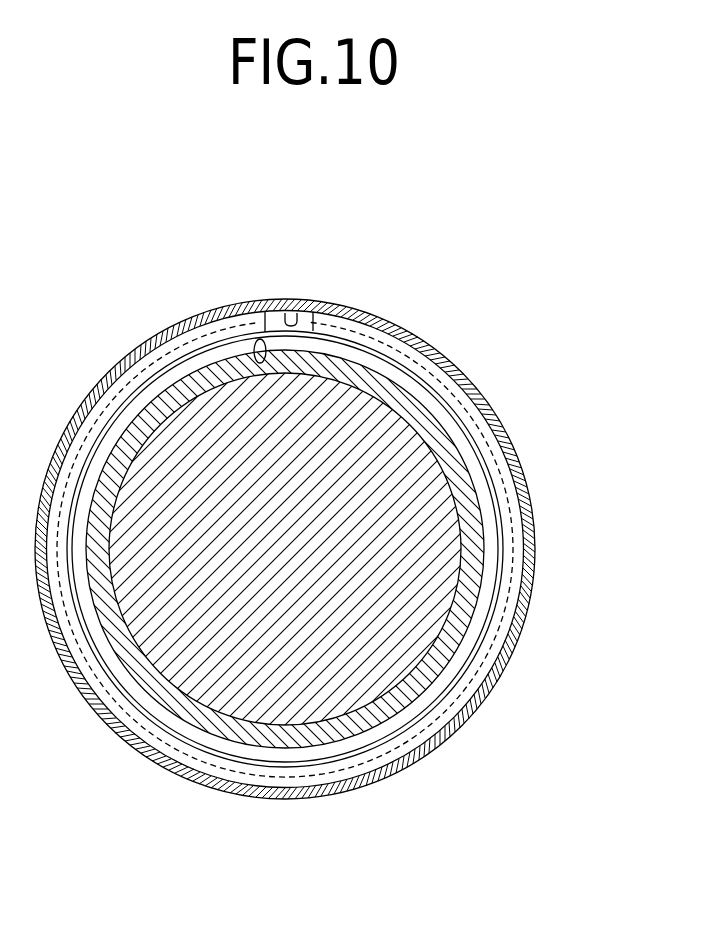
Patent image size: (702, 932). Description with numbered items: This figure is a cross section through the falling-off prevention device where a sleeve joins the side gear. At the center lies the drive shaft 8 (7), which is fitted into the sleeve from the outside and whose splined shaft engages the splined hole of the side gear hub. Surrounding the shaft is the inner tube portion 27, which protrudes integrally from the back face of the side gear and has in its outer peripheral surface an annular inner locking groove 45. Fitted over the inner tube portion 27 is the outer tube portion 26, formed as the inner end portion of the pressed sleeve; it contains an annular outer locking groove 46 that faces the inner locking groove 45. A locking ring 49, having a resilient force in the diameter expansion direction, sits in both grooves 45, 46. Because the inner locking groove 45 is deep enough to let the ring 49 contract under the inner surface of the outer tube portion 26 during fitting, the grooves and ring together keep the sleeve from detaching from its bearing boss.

The locking ring 49 is at (519, 476).
The outer tube portion 26 is at (455, 363).
The outer locking groove 46 is at (298, 312).
The inner locking groove 45 is at (266, 358).
The inner tube portion 27 is at (110, 548).
The right drive shaft 8 is at (351, 549).
The left drive shaft 7 is at (322, 597).